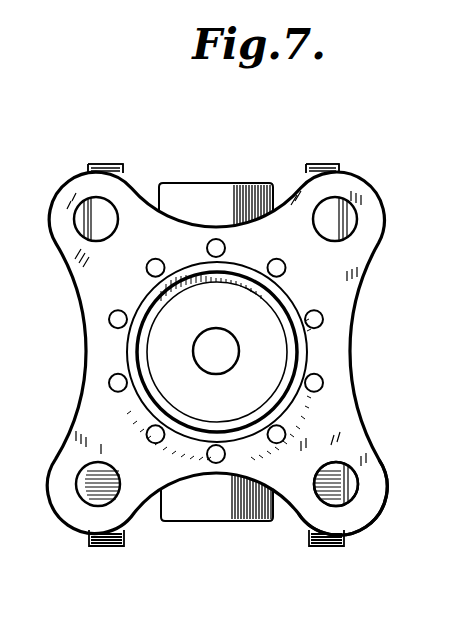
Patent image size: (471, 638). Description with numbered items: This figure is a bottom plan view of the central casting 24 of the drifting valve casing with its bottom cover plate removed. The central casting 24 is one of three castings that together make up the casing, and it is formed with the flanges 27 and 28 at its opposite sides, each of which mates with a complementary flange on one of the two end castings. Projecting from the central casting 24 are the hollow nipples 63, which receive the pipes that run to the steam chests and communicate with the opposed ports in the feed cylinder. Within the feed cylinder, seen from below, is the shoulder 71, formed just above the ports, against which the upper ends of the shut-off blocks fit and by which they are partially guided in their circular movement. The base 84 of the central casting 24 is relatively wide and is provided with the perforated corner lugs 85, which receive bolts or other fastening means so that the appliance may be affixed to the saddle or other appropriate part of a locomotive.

The central casting 24 is at (350, 346).
The flange 27 is at (100, 172).
The flange 28 is at (316, 170).
The nipple 63 is at (197, 200).
The shoulder 71 is at (148, 383).
The base 84 is at (338, 428).
The perforated corner lug 85 is at (353, 482).